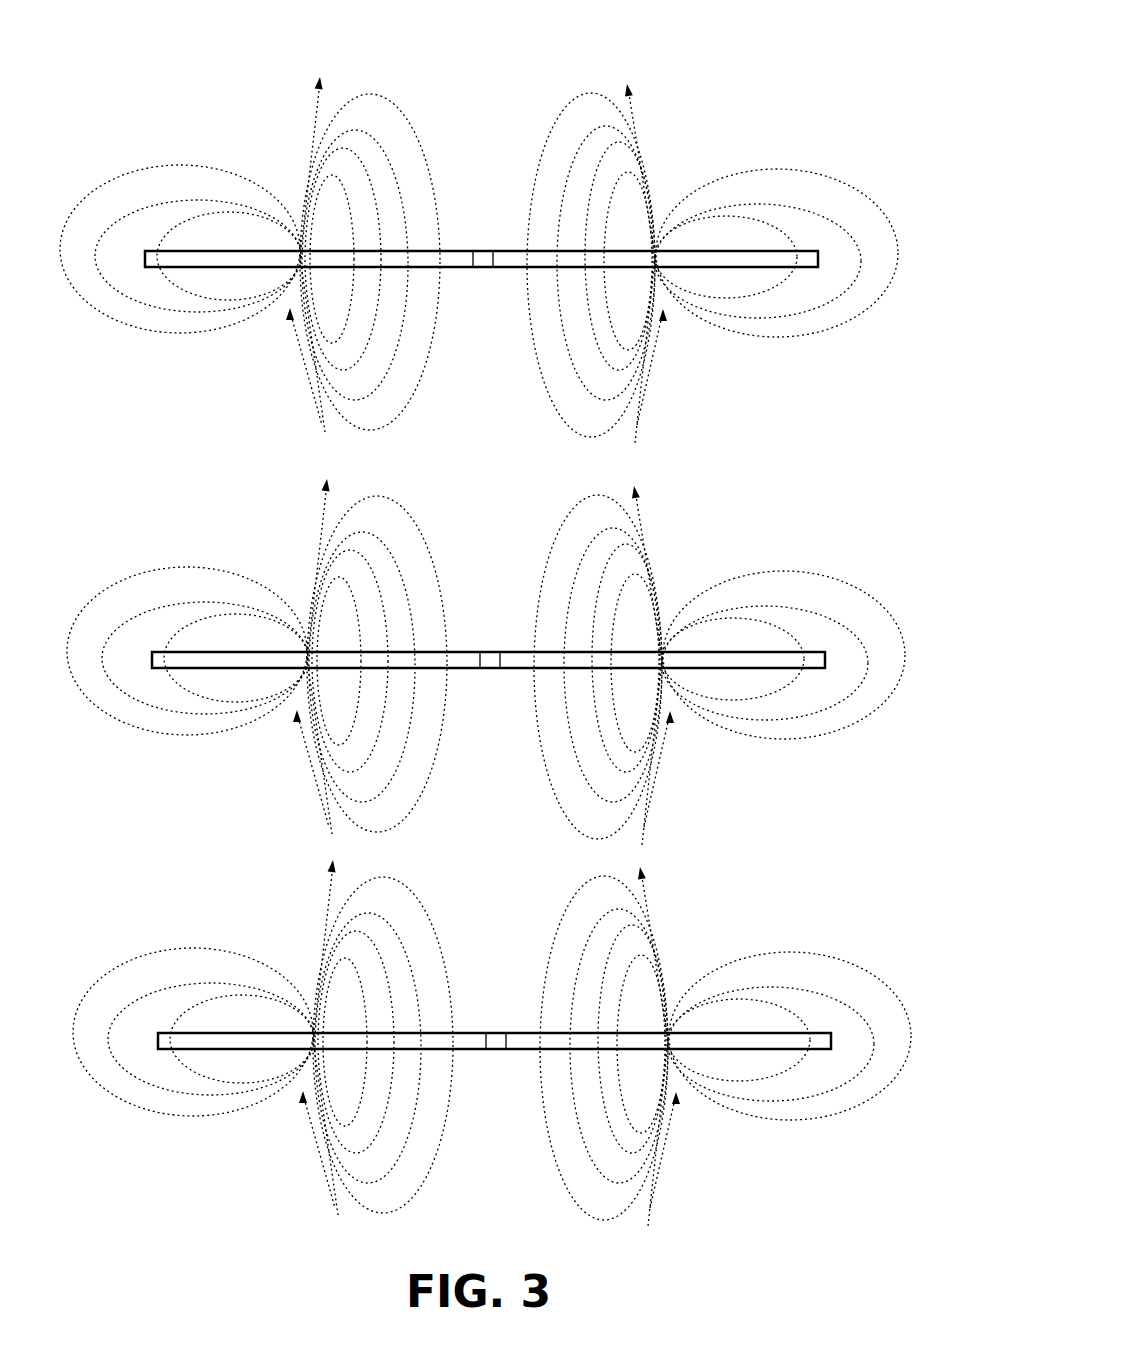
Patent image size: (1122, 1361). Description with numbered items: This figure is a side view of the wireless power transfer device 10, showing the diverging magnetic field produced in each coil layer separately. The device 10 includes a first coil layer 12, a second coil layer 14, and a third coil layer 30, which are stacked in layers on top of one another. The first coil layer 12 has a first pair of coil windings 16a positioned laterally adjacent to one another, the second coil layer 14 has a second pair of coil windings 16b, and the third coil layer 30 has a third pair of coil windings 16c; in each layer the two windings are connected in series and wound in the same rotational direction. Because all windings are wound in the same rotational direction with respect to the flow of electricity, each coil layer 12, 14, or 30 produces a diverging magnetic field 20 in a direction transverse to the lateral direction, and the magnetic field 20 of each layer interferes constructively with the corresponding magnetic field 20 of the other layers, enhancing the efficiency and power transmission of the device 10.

The wireless power transfer device 10 is at (755, 62).
The first coil layer 12 is at (905, 1007).
The second coil layer 14 is at (908, 632).
The third coil layer 30 is at (906, 237).
The first pair of coil windings 16a is at (429, 1049).
The second pair of coil windings 16b is at (430, 668).
The third pair of coil windings 16c is at (422, 268).
The diverging magnetic field 20 is at (422, 143).